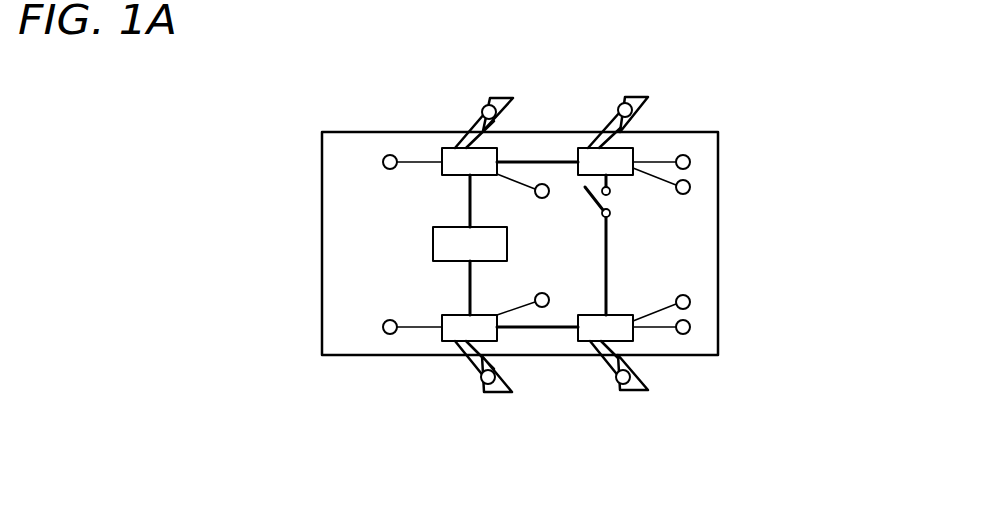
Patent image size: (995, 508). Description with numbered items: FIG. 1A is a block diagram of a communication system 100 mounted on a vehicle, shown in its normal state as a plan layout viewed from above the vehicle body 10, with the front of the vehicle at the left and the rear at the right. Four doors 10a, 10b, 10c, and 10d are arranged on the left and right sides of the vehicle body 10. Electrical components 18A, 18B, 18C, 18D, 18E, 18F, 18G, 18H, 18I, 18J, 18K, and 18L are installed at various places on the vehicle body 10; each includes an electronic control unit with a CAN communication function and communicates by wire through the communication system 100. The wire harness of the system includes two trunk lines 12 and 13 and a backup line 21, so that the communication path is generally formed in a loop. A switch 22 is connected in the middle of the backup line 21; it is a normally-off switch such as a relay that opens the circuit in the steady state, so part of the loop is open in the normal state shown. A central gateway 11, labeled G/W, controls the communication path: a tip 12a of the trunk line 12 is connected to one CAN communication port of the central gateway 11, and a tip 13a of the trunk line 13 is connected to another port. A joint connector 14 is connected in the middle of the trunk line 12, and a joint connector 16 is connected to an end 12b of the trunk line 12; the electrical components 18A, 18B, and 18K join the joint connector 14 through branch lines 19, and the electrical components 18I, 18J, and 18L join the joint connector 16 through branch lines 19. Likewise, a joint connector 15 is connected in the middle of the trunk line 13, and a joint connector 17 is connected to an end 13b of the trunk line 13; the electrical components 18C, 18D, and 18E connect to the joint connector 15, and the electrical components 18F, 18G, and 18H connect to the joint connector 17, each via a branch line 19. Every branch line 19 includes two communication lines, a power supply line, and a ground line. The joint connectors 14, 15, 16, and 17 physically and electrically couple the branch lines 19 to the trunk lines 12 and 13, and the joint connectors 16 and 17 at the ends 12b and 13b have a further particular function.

The communication system 100 is at (345, 374).
The vehicle body 10 is at (357, 131).
The door 10a is at (494, 78).
The door 10b is at (496, 413).
The door 10c is at (628, 78).
The door 10d is at (630, 413).
The central gateway 11 is at (432, 243).
The trunk line 12 is at (474, 135).
The tip of the trunk line 12a is at (468, 216).
The end of the trunk line 12b is at (576, 160).
The trunk line 13 is at (474, 355).
The tip of the trunk line 13a is at (468, 270).
The end of the trunk line 13b is at (578, 329).
The joint connector 14 is at (447, 148).
The joint connector 15 is at (448, 343).
The joint connector 16 is at (628, 147).
The joint connector 17 is at (633, 343).
The electrical component 18A is at (383, 162).
The electrical component 18B is at (542, 199).
The electrical component 18C is at (383, 327).
The electrical component 18D is at (488, 385).
The electrical component 18E is at (572, 255).
The electrical component 18F is at (622, 385).
The electrical component 18G is at (690, 327).
The electrical component 18H is at (690, 302).
The electrical component 18I is at (690, 185).
The electrical component 18J is at (690, 157).
The electrical component 18K is at (489, 104).
The electrical component 18L is at (625, 103).
The branch line 19 is at (417, 160).
The backup line 21 is at (608, 265).
The switch 22 is at (610, 203).